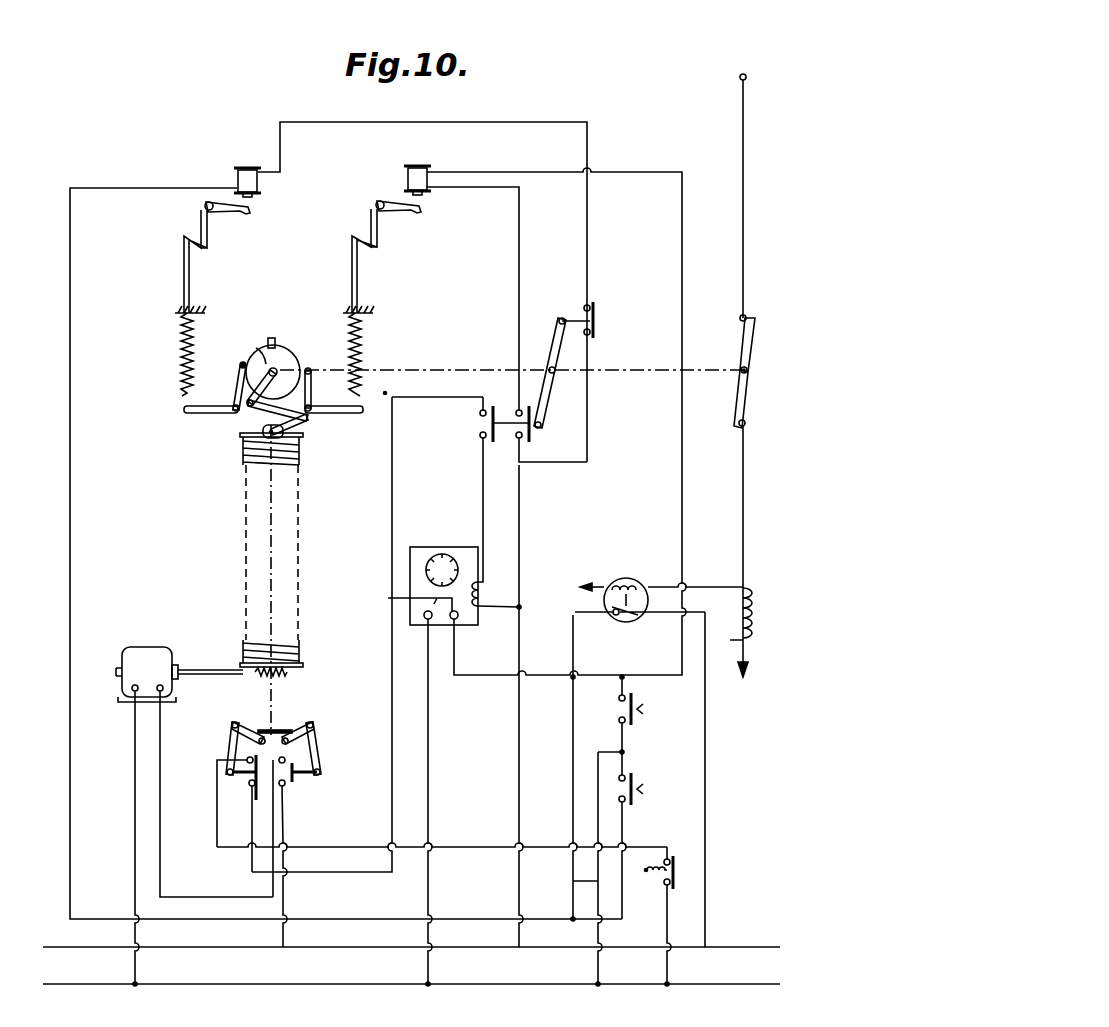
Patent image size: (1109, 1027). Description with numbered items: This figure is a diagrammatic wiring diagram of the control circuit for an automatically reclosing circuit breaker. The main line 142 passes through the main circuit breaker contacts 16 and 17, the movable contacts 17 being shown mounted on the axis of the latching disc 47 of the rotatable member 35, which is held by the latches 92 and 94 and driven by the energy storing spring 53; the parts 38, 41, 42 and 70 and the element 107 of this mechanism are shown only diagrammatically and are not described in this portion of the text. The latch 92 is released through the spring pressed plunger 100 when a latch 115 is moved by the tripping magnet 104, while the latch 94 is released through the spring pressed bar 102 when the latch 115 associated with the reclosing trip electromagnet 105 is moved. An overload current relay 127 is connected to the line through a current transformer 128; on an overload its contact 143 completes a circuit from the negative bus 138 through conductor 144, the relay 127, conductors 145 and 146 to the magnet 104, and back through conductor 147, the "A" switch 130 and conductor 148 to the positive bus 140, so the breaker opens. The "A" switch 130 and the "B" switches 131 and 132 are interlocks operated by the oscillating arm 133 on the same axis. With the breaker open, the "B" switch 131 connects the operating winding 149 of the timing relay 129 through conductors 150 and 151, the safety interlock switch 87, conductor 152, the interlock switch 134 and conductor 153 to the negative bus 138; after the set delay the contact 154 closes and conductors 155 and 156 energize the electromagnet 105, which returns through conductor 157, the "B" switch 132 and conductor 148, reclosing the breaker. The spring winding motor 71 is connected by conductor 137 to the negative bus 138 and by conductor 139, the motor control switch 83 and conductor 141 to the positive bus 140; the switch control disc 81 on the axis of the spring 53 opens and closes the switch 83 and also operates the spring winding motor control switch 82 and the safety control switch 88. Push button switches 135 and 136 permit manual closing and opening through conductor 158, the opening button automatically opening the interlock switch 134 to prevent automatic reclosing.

The main circuit breaker contacts 16 is at (740, 318).
The movable contacts 17 is at (752, 343).
The rotatable member 35 is at (276, 370).
The cam disk 38 is at (248, 346).
The link 41 is at (303, 426).
The link 42 is at (258, 413).
The latching disc 47 is at (282, 355).
The energy storing spring 53 is at (243, 465).
The solenoid coil 70 is at (290, 672).
The spring winding motor 71 is at (152, 647).
The switch control disc 81 is at (282, 730).
The spring winding motor control switch 82 is at (320, 745).
The motor control switch 83 is at (285, 786).
The safety interlock switch 87 is at (250, 786).
The safety control switch 88 is at (232, 740).
The latch 92 is at (236, 392).
The latch 94 is at (312, 390).
The spring pressed plunger 100 is at (185, 406).
The spring pressed bar 102 is at (365, 408).
The tripping magnet 104 is at (237, 177).
The reclosing trip electromagnet 105 is at (408, 178).
The spring 107 is at (181, 350).
The latch 115 is at (205, 206).
The overload current relay 127 is at (628, 578).
The current transformer 128 is at (752, 613).
The timing relay 129 is at (418, 547).
The "A" switch 130 is at (597, 310).
The "B" switch 131 is at (480, 423).
The "B" switch 132 is at (535, 421).
The oscillating arm 133 is at (551, 348).
The interlock switch 134 is at (670, 885).
The push button switch 135 is at (618, 703).
The push button switch 136 is at (632, 781).
The conductor 137 is at (135, 810).
The negative bus 138 is at (192, 985).
The conductor 139 is at (160, 815).
The positive bus 140 is at (240, 948).
The conductor 141 is at (285, 892).
The main line 142 is at (745, 206).
The contact 143 is at (630, 620).
The conductor 144 is at (707, 788).
The conductor 145 is at (573, 738).
The conductor 146 is at (70, 492).
The conductor 147 is at (466, 123).
The conductor 148 is at (519, 777).
The operating winding 149 is at (480, 593).
The conductor 150 is at (483, 487).
The conductor 151 is at (392, 512).
The conductor 152 is at (333, 847).
The conductor 153 is at (667, 934).
The contact 154 is at (402, 598).
The conductor 155 is at (429, 722).
The conductor 156 is at (682, 435).
The conductor 157 is at (519, 266).
The conductor 158 is at (573, 881).